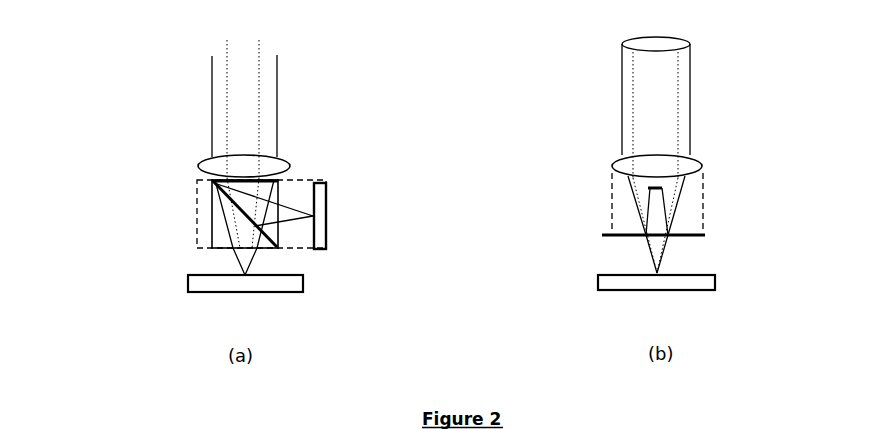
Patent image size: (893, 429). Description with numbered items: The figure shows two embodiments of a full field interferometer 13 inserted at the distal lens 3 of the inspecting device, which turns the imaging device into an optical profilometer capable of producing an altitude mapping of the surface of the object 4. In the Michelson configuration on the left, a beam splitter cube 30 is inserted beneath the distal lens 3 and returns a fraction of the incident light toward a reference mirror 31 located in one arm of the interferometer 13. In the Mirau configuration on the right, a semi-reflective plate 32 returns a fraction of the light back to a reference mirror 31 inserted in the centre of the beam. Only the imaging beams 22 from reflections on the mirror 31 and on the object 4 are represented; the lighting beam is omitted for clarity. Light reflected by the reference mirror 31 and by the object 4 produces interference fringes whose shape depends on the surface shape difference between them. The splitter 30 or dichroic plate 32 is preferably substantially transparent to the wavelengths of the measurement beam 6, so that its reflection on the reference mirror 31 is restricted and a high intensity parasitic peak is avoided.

The imaging beams 22 is at (212, 70).
The measurement beam 6 is at (216, 106).
The distal lens 3 is at (200, 165).
The full field interferometer 13 is at (197, 213).
The beam splitter cube 30 is at (212, 238).
The reference mirror 31 is at (326, 217).
The semi-reflective plate 32 is at (602, 235).
The object 4 is at (188, 284).